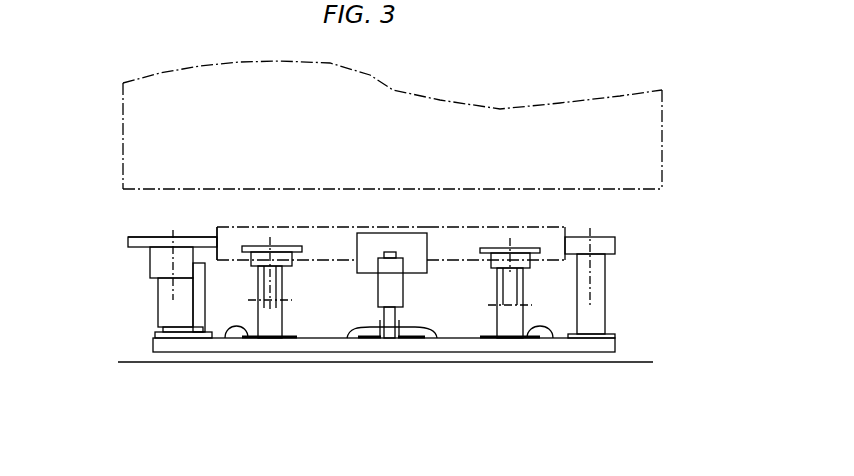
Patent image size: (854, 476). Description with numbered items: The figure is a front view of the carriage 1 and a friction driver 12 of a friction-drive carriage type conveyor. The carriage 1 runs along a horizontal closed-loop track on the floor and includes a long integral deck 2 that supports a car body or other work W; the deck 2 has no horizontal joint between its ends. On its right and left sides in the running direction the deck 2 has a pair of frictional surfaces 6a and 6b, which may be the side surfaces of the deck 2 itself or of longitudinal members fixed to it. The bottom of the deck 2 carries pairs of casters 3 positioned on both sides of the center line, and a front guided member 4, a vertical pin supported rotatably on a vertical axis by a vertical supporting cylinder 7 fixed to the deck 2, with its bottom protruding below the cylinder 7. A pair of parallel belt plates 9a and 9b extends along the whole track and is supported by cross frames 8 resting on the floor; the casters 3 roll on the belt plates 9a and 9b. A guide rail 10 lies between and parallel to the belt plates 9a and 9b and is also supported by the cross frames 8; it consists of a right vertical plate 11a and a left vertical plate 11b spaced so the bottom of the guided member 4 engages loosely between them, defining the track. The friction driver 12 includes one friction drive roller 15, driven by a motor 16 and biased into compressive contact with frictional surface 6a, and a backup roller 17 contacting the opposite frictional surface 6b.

The work W is at (142, 110).
The carriage 1 is at (317, 223).
The deck 2 is at (468, 237).
The casters 3 is at (270, 338).
The front guided member 4 is at (392, 339).
The frictional surface 6a is at (215, 230).
The frictional surface 6b is at (580, 236).
The vertical supporting cylinder 7 is at (385, 290).
The cross frames 8 is at (183, 347).
The belt plate 9a is at (226, 340).
The belt plate 9b is at (552, 340).
The guide rail 10 is at (412, 317).
The right vertical plate 11a is at (360, 336).
The left vertical plate 11b is at (435, 334).
The friction driver 12 is at (118, 248).
The friction drive roller 15 is at (140, 237).
The motor 16 is at (173, 302).
The backup roller 17 is at (615, 248).